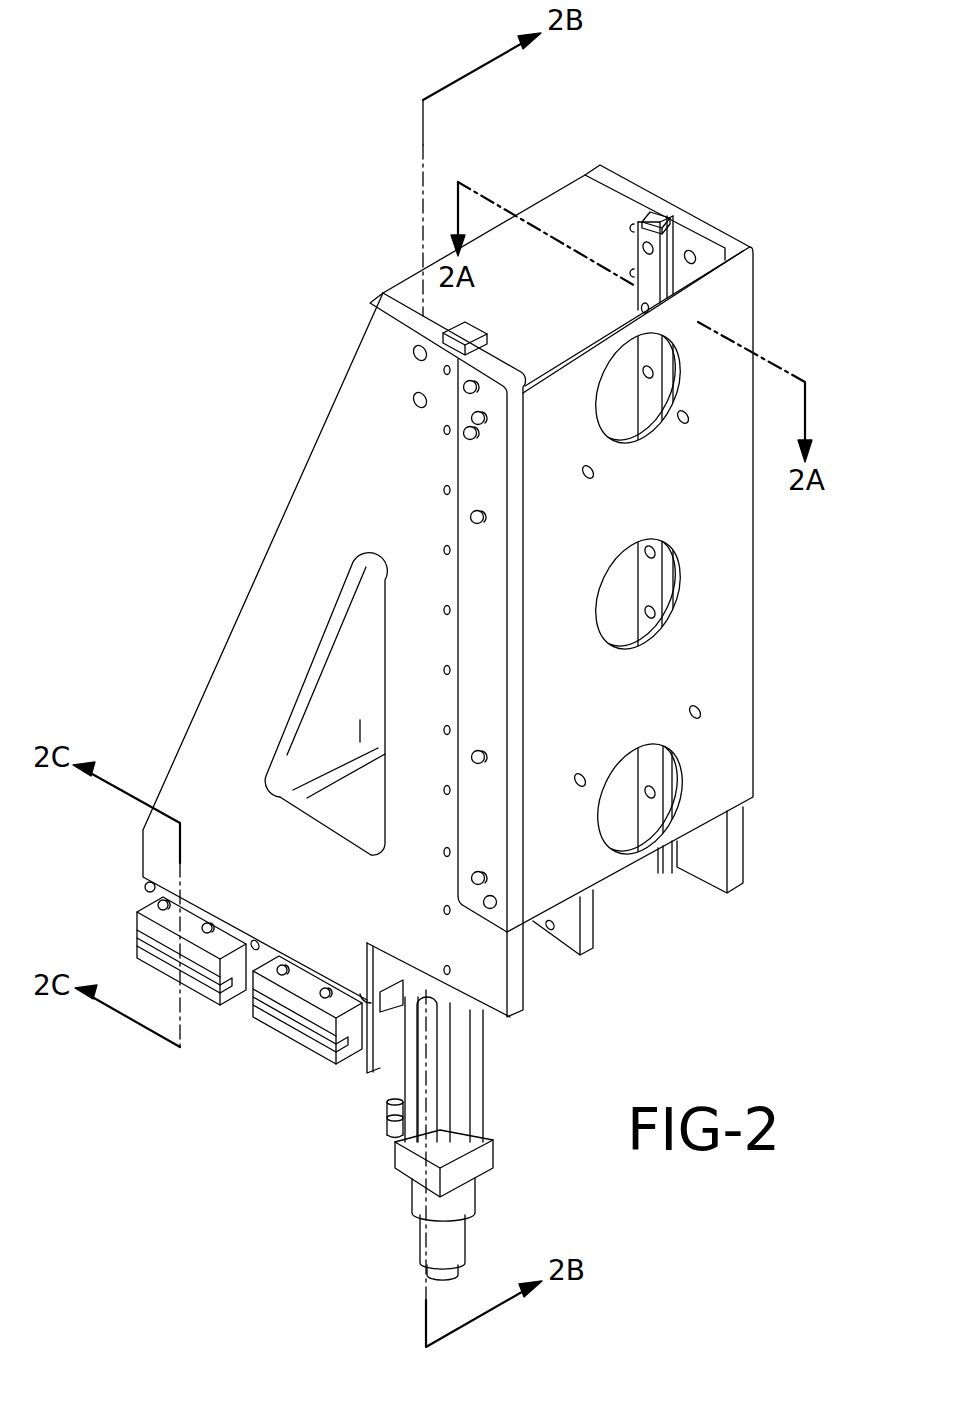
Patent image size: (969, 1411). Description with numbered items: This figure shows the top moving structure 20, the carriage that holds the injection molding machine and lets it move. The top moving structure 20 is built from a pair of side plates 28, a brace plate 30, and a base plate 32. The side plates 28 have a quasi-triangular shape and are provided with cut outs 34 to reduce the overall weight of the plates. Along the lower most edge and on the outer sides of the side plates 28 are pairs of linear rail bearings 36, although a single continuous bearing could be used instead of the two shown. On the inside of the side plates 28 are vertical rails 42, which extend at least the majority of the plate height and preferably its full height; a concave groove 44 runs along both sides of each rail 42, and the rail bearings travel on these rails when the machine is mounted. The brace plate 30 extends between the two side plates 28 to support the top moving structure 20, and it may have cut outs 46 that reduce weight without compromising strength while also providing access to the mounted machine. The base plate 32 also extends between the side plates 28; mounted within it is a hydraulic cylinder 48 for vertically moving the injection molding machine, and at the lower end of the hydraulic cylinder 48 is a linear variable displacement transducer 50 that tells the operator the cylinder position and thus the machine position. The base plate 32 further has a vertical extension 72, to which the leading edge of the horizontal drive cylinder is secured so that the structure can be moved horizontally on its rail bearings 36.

The top moving structure 20 is at (279, 332).
The side plates 28 is at (318, 514).
The brace plate 30 is at (718, 620).
The base plate 32 is at (379, 811).
The cut outs 34 is at (333, 627).
The linear rail bearings 36 is at (224, 984).
The vertical rails 42 is at (450, 340).
The concave groove 44 is at (666, 247).
The cut outs 46 is at (663, 825).
The hydraulic cylinder 48 is at (460, 1071).
The linear variable displacement transducer 50 is at (455, 1244).
The vertical extension 72 is at (320, 773).